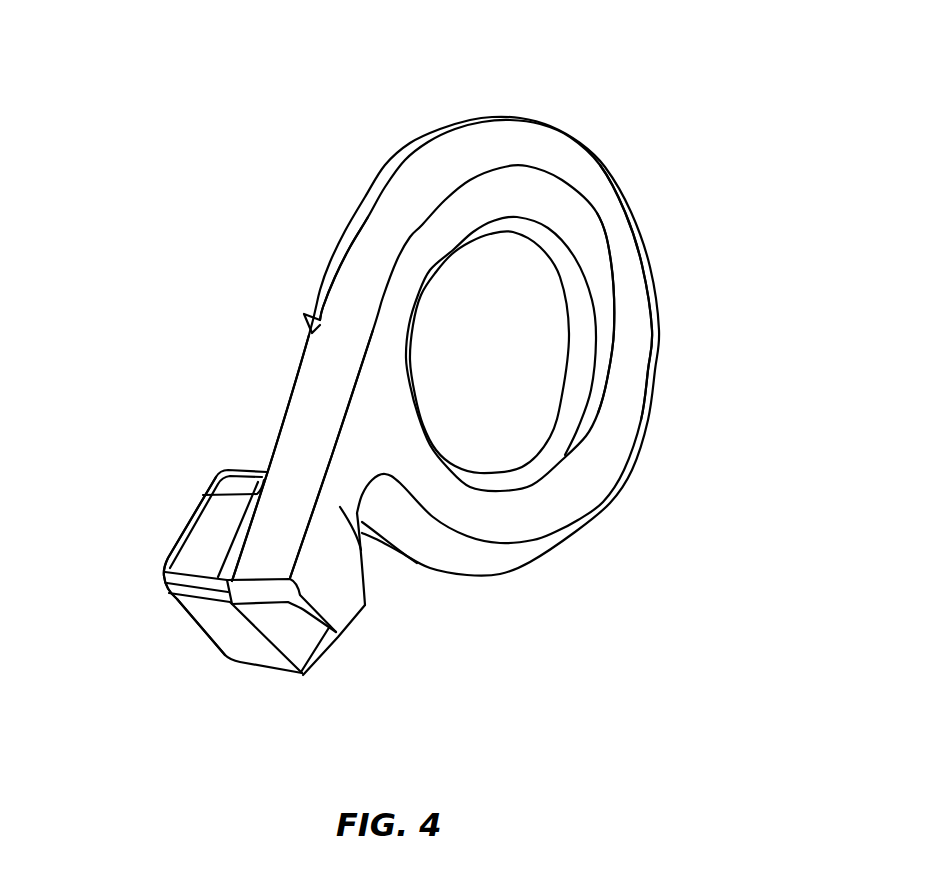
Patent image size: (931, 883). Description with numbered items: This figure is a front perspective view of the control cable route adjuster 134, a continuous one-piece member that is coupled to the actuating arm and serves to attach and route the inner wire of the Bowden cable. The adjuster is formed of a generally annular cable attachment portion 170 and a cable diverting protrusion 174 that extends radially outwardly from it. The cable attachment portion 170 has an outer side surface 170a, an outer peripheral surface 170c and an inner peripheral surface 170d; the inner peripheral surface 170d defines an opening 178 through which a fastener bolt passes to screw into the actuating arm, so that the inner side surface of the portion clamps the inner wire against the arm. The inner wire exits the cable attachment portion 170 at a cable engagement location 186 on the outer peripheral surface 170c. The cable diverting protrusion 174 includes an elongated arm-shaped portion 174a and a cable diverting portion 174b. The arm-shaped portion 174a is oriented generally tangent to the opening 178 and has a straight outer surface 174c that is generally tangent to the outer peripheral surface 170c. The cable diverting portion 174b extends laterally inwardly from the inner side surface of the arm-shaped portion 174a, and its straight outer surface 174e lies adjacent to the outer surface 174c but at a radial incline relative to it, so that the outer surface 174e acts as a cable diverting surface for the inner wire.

The control cable route adjuster 134 is at (387, 104).
The cable attachment portion 170 is at (622, 175).
The outer side surface 170a is at (628, 291).
The outer peripheral surface 170c is at (311, 302).
The inner peripheral surface 170d is at (549, 438).
The cable diverting protrusion 174 is at (254, 680).
The arm-shaped portion 174a is at (340, 507).
The cable diverting portion 174b is at (168, 556).
The straight outer surface 174c is at (315, 417).
The straight outer surface 174e is at (202, 534).
The opening 178 is at (498, 377).
The cable engagement location 186 is at (303, 326).